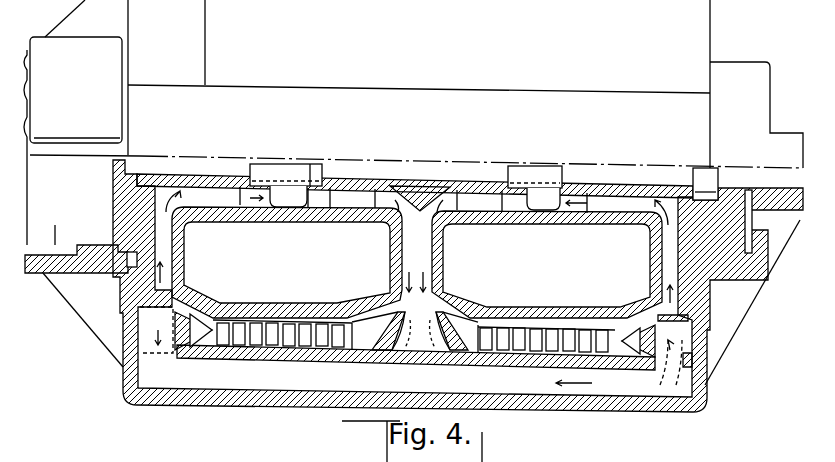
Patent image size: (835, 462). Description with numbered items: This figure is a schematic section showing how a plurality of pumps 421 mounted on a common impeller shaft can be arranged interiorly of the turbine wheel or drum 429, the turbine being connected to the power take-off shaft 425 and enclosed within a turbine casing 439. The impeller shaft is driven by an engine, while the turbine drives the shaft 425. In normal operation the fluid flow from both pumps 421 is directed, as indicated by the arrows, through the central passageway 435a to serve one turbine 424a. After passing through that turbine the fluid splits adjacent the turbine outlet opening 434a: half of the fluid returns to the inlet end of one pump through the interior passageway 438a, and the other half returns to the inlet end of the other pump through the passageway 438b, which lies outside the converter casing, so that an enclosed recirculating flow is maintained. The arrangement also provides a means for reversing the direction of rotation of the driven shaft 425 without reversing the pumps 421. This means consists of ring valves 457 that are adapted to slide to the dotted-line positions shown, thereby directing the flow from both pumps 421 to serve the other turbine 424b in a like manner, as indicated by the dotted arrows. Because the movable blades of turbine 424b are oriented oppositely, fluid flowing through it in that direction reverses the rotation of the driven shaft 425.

The pumps 421 is at (285, 198).
The interior passageway 438a is at (645, 206).
The passageway 438b is at (538, 392).
The passageway 435a is at (420, 256).
The power take-off shaft 425 is at (45, 276).
The ring valves 457 is at (163, 352).
The turbine 424b is at (201, 358).
The turbine 424a is at (513, 353).
The turbine casing 439 is at (458, 352).
The turbine outlet opening 434a is at (627, 348).
The turbine wheel or drum 429 is at (703, 340).